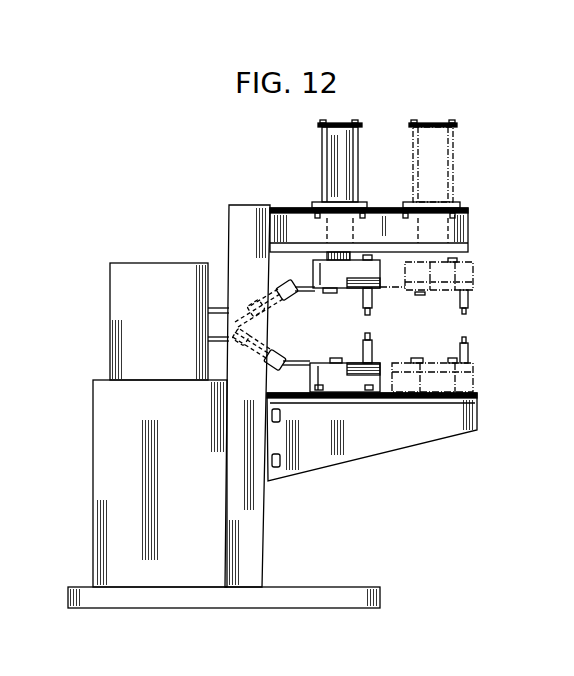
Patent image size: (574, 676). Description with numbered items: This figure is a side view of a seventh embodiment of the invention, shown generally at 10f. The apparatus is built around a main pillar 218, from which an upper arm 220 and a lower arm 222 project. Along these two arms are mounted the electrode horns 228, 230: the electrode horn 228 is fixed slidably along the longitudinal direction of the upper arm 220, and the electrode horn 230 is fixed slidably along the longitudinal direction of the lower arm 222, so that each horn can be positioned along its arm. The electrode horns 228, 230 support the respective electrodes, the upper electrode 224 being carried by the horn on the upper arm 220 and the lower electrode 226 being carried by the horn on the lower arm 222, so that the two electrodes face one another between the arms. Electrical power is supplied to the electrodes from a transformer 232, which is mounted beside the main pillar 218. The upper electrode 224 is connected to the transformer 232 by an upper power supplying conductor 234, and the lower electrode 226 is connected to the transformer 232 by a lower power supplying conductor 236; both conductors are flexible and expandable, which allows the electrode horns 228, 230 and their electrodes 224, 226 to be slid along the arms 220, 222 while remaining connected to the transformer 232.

The seventh embodiment 10f is at (537, 97).
The main pillar 218 is at (264, 325).
The upper arm 220 is at (460, 232).
The lower arm 222 is at (468, 413).
The upper electrode 224 is at (371, 303).
The lower electrode 226 is at (369, 345).
The electrode horn 228 is at (380, 272).
The electrode horn 230 is at (378, 380).
The transformer 232 is at (163, 270).
The upper power supplying conductor 234 is at (344, 288).
The lower power supplying conductor 236 is at (301, 360).